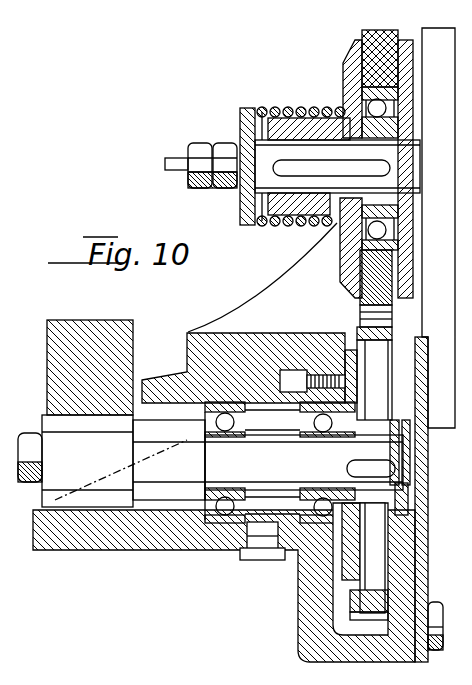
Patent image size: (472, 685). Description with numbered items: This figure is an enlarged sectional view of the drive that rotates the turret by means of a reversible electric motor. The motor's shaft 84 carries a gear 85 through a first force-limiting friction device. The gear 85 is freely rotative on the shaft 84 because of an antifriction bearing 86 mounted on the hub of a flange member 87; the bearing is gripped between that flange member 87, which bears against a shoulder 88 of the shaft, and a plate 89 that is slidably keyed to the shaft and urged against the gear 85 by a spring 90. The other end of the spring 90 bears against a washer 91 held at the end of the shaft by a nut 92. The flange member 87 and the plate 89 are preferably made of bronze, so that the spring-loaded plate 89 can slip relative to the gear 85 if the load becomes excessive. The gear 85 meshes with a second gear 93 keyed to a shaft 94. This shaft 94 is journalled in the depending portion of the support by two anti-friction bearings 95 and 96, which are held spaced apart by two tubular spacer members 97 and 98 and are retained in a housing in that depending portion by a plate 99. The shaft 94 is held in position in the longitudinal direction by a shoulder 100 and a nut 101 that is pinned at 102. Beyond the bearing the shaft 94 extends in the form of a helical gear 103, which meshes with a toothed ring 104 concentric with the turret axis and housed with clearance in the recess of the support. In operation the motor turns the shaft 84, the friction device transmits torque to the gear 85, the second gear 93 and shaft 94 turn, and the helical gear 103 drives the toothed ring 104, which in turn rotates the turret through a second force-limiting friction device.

The shaft 84 is at (332, 155).
The gear 85 is at (362, 40).
The antifriction bearing 86 is at (378, 90).
The flange member 87 is at (406, 242).
The shoulder 88 is at (420, 165).
The plate 89 is at (348, 270).
The spring 90 is at (301, 107).
The washer 91 is at (240, 130).
The nut 92 is at (236, 189).
The second gear 93 is at (392, 342).
The shaft 94 is at (205, 463).
The anti-friction bearing 95 is at (226, 526).
The anti-friction bearing 96 is at (323, 522).
The tubular spacer member 97 is at (265, 402).
The tubular spacer member 98 is at (262, 440).
The plate 99 is at (375, 565).
The shoulder 100 is at (208, 468).
The nut 101 is at (404, 422).
The pin 102 is at (400, 515).
The helical gear 103 is at (55, 500).
The toothed ring 104 is at (57, 378).